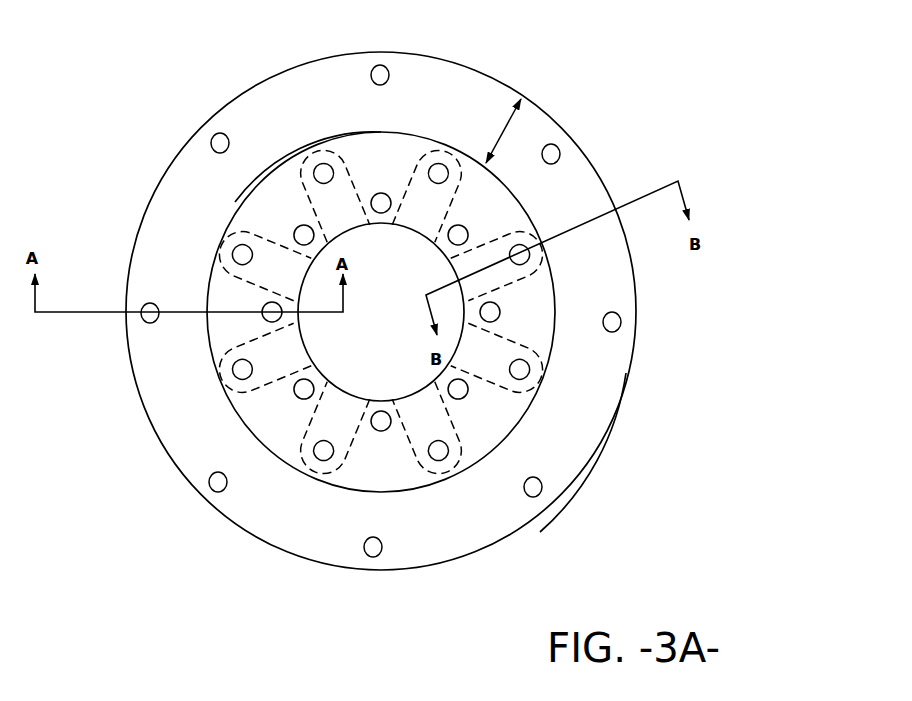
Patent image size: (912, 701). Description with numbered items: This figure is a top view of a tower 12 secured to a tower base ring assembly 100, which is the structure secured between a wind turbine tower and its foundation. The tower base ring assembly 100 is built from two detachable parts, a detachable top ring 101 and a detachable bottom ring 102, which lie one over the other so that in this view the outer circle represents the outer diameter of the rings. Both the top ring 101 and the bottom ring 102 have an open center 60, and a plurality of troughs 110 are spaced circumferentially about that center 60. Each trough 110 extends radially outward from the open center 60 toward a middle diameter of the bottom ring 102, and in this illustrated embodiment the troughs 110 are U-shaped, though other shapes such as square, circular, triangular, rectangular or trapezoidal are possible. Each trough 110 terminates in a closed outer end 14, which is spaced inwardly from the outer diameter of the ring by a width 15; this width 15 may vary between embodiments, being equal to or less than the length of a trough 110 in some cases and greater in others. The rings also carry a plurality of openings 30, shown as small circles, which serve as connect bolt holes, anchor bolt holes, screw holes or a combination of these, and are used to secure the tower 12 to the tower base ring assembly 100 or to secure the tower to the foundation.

The tower base ring assembly 100 is at (596, 400).
The detachable top ring 101 is at (253, 125).
The detachable bottom ring 102 is at (579, 477).
The tower 12 is at (262, 445).
The closed outer end 14 is at (317, 147).
The width 15 is at (503, 135).
The openings 30 is at (294, 228).
The open center 60 is at (371, 295).
The troughs 110 is at (310, 462).